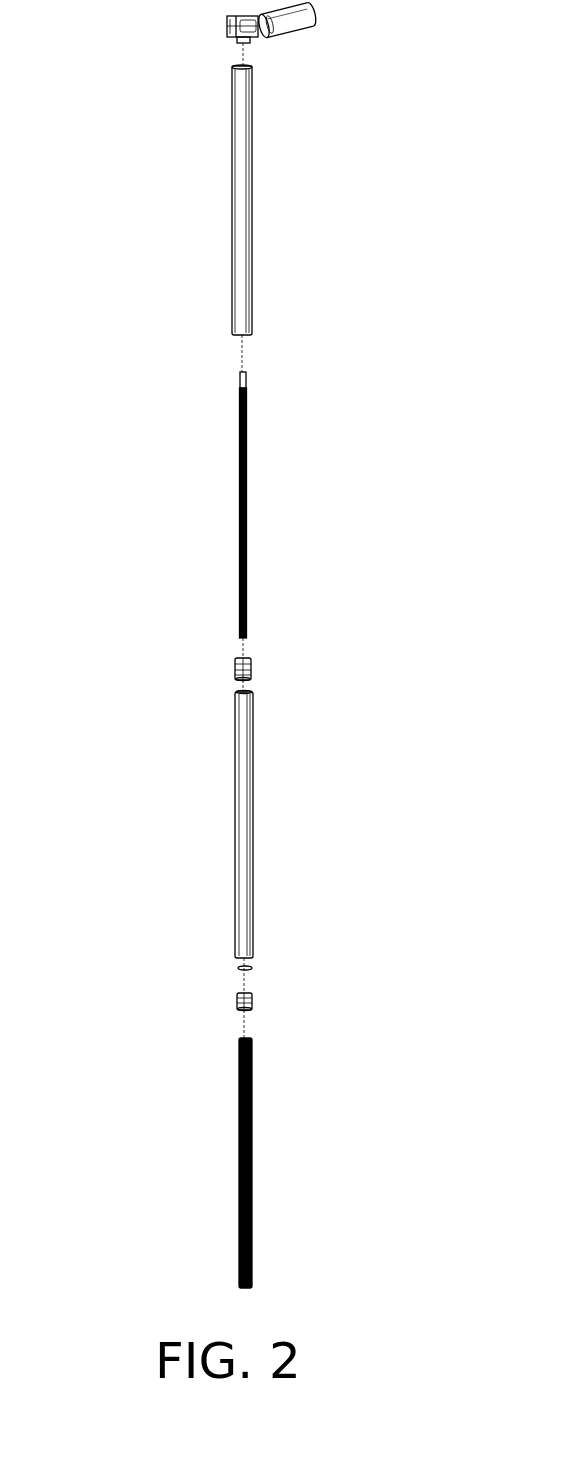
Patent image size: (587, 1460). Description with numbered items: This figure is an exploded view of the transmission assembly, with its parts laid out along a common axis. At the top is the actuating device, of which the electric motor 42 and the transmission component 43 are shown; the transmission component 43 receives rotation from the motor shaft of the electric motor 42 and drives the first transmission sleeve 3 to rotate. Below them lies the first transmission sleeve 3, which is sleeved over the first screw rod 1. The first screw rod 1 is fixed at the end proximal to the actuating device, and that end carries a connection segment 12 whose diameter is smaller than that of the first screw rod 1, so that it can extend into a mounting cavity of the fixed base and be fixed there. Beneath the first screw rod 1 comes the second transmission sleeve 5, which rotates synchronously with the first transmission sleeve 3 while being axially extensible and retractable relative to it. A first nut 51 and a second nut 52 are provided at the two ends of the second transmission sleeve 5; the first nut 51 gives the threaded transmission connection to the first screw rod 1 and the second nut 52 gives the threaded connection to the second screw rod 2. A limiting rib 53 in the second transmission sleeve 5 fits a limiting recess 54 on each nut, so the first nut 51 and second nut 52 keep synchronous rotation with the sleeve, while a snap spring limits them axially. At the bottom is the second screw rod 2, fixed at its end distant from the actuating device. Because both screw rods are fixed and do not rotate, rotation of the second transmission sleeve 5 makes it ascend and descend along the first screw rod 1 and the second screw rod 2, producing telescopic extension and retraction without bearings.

The first screw rod 1 is at (309, 496).
The second screw rod 2 is at (253, 1150).
The first transmission sleeve 3 is at (245, 156).
The second transmission sleeve 5 is at (245, 836).
The connection segment 12 is at (245, 382).
The electric motor 42 is at (293, 25).
The transmission component 43 is at (227, 23).
The first nut 51 is at (251, 663).
The second nut 52 is at (252, 993).
The limiting rib 53 is at (251, 678).
The limiting recess 54 is at (237, 692).